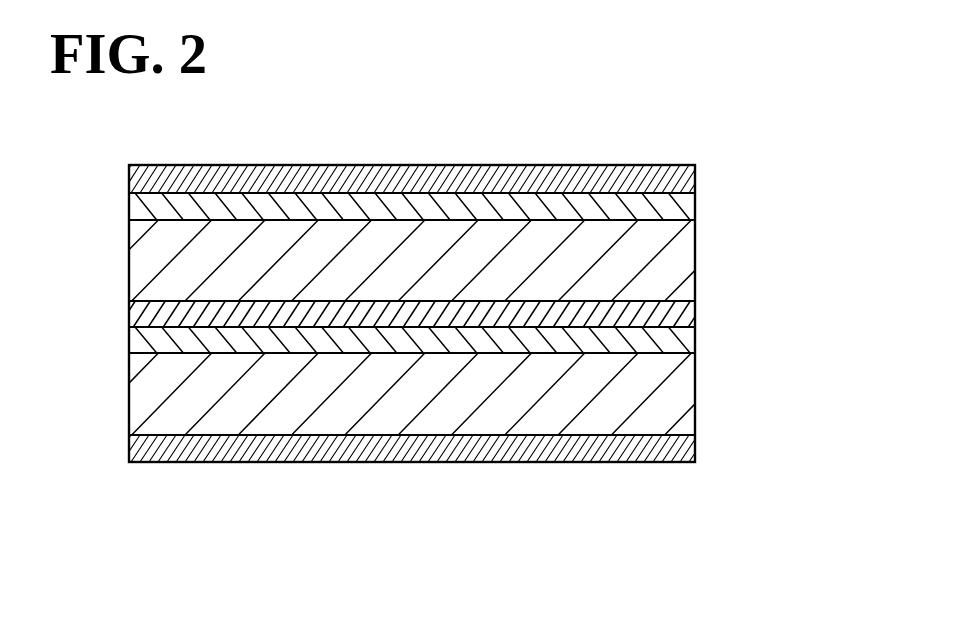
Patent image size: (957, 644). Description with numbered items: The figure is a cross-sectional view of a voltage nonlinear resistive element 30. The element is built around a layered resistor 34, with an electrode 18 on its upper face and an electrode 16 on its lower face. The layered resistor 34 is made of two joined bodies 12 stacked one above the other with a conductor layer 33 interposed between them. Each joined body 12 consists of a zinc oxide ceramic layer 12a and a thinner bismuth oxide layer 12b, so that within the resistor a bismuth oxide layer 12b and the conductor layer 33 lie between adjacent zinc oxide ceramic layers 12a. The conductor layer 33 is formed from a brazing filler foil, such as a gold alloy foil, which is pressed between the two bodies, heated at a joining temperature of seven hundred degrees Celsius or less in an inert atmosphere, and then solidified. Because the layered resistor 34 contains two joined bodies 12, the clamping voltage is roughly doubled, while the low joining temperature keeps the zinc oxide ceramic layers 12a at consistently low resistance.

The voltage nonlinear resistive element 30 is at (678, 140).
The electrode 18 is at (681, 177).
The joined body 12 is at (805, 192).
The zinc oxide ceramic layer 12a is at (681, 274).
The bismuth oxide layer 12b is at (680, 203).
The conductor layer 33 is at (682, 312).
The layered resistor 34 is at (117, 193).
The electrode 16 is at (681, 450).